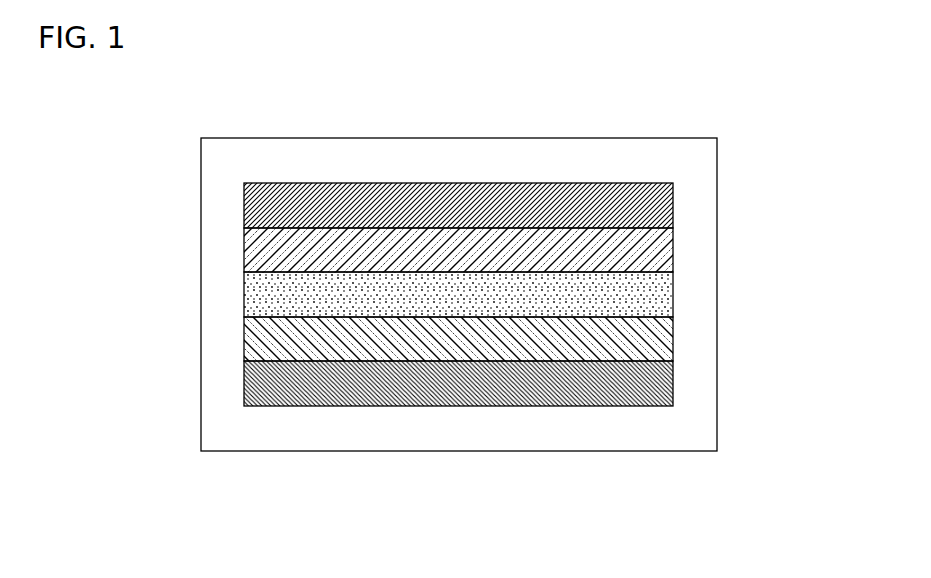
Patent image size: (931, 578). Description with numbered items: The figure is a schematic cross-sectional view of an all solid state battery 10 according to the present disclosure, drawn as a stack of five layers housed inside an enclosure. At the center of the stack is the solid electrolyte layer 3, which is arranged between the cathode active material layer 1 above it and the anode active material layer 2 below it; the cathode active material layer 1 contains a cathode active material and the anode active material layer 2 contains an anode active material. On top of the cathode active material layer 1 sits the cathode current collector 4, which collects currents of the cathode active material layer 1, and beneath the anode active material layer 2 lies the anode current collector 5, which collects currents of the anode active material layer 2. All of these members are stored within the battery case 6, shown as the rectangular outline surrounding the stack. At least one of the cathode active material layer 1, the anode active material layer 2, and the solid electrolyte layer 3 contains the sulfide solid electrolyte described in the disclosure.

The all solid state battery 10 is at (493, 260).
The battery case 6 is at (687, 170).
The cathode current collector 4 is at (650, 210).
The cathode active material layer 1 is at (645, 255).
The solid electrolyte layer 3 is at (643, 300).
The anode active material layer 2 is at (645, 345).
The anode current collector 5 is at (645, 388).